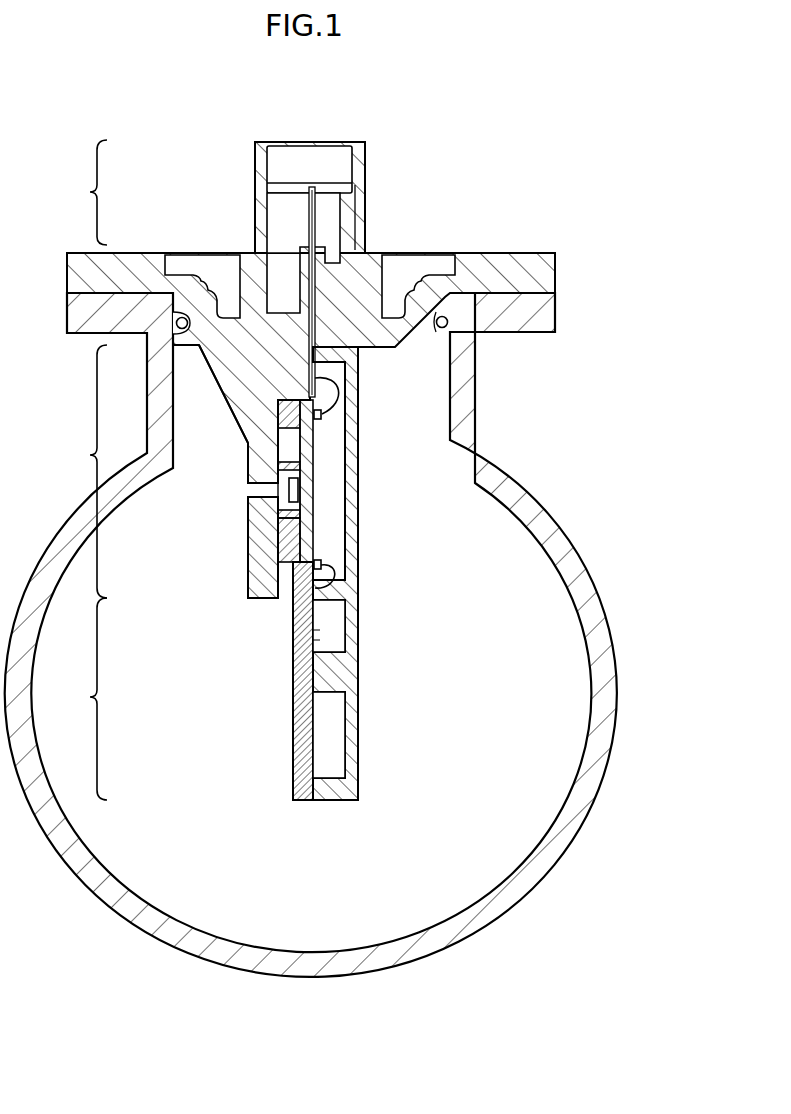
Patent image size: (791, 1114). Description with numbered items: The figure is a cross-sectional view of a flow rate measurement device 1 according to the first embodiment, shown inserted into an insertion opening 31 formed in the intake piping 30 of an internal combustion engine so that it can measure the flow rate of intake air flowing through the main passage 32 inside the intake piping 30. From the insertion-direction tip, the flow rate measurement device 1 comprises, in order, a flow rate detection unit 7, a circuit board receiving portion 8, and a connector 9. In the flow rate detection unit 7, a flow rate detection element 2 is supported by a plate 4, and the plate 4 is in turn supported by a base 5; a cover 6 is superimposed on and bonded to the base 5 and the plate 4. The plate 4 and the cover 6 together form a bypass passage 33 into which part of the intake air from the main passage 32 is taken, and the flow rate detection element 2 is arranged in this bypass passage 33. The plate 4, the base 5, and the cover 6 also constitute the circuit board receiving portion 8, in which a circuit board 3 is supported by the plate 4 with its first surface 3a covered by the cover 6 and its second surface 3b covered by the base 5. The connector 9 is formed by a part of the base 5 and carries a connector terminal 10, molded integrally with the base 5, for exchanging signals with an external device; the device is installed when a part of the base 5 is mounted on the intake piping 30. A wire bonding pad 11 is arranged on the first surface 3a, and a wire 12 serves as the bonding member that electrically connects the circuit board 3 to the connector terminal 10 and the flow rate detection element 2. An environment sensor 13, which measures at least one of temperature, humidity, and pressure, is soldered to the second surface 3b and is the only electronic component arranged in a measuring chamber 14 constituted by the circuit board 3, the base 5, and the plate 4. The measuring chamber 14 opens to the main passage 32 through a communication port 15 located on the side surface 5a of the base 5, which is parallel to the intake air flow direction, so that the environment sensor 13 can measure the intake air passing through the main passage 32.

The flow rate measurement device 1 is at (332, 142).
The flow rate detection element 2 is at (318, 625).
The circuit board 3 is at (308, 470).
The first surface 3a is at (320, 513).
The second surface 3b is at (280, 528).
The plate 4 is at (300, 800).
The base 5 is at (525, 268).
The side surface 5a is at (248, 456).
The cover 6 is at (348, 790).
The flow rate detection unit 7 is at (84, 699).
The circuit board receiving portion 8 is at (84, 471).
The connector 9 is at (213, 201).
The connector terminal 10 is at (316, 224).
The wire bonding pad 11 is at (322, 415).
The wire 12 is at (318, 382).
The environment sensor 13 is at (298, 490).
The measuring chamber 14 is at (270, 514).
The communication port 15 is at (257, 491).
The intake piping 30 is at (502, 902).
The insertion opening 31 is at (455, 337).
The main passage 32 is at (555, 684).
The bypass passage 33 is at (332, 638).